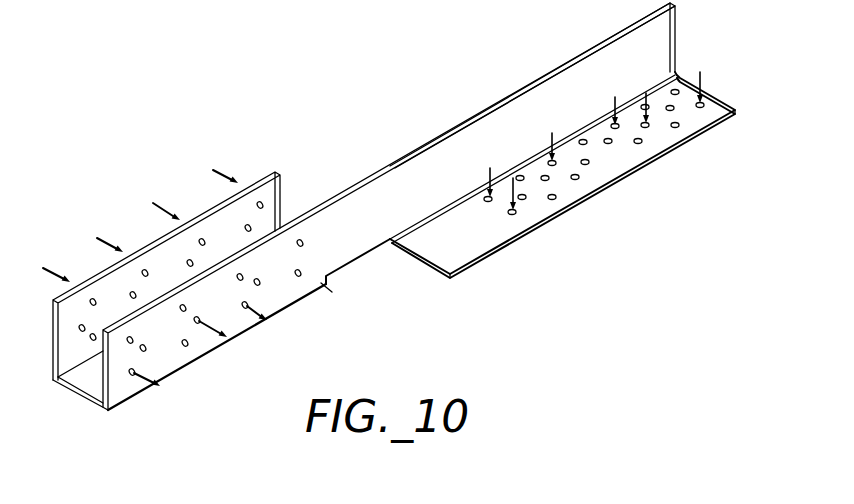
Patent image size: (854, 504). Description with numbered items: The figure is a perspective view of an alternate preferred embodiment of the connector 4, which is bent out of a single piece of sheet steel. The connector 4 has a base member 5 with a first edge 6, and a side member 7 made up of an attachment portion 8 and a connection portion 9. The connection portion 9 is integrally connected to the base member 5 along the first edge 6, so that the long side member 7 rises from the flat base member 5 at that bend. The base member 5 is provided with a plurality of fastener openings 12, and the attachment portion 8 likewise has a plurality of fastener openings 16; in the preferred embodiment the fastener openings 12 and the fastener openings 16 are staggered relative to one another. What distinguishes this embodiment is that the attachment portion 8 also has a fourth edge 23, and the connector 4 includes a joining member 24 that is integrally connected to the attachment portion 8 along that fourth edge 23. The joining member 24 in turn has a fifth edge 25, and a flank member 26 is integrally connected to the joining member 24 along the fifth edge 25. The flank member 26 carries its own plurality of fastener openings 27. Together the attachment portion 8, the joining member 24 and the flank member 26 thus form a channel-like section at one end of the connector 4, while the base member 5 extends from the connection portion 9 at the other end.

The connector 4 is at (331, 140).
The base member 5 is at (432, 266).
The first edge 6 is at (413, 227).
The side member 7 is at (391, 158).
The attachment portion 8 is at (285, 292).
The connection portion 9 is at (527, 84).
The fastener openings 12 is at (576, 179).
The fastener openings 16 is at (143, 349).
The fourth edge 23 is at (130, 399).
The joining member 24 is at (90, 392).
The fifth edge 25 is at (72, 384).
The flank member 26 is at (158, 237).
The fastener openings 27 is at (82, 326).